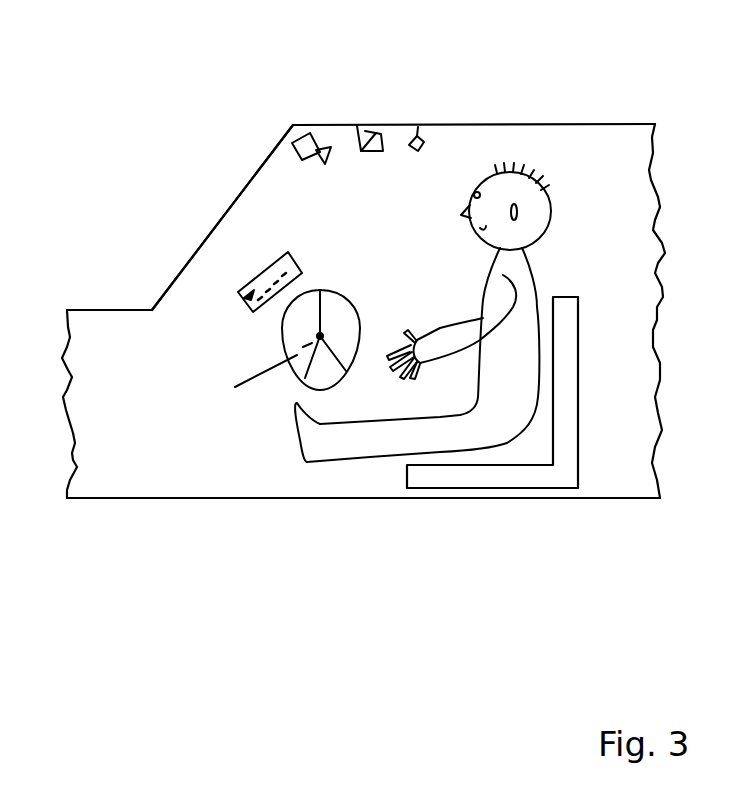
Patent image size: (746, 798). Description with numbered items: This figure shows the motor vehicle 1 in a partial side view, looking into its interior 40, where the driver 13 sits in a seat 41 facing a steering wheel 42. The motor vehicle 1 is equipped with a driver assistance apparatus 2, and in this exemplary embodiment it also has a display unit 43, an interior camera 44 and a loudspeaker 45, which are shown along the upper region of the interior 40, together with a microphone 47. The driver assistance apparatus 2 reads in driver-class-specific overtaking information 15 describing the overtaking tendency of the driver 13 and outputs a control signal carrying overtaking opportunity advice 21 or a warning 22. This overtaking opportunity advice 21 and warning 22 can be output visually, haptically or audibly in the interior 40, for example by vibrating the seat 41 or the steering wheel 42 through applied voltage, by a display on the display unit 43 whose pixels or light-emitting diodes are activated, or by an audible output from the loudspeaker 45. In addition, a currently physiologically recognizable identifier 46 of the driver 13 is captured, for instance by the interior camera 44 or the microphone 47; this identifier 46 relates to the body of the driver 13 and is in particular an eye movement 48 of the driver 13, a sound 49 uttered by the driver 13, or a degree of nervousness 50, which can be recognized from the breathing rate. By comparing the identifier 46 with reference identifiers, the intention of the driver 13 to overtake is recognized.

The motor vehicle 1 is at (107, 310).
The driver assistance apparatus 2 is at (252, 130).
The driver 13 is at (360, 443).
The overtaking information 15 is at (273, 115).
The overtaking opportunity advice 21 is at (257, 283).
The warning 22 is at (240, 293).
The interior 40 is at (577, 147).
The seat 41 is at (498, 477).
The steering wheel 42 is at (297, 373).
The display unit 43 is at (265, 272).
The interior camera 44 is at (300, 140).
The loudspeaker 45 is at (376, 128).
The physiologically recognizable identifier 46 is at (458, 178).
The microphone 47 is at (420, 133).
The eye movement 48 is at (466, 193).
The sound 49 is at (470, 238).
The degree of nervousness 50 is at (438, 227).